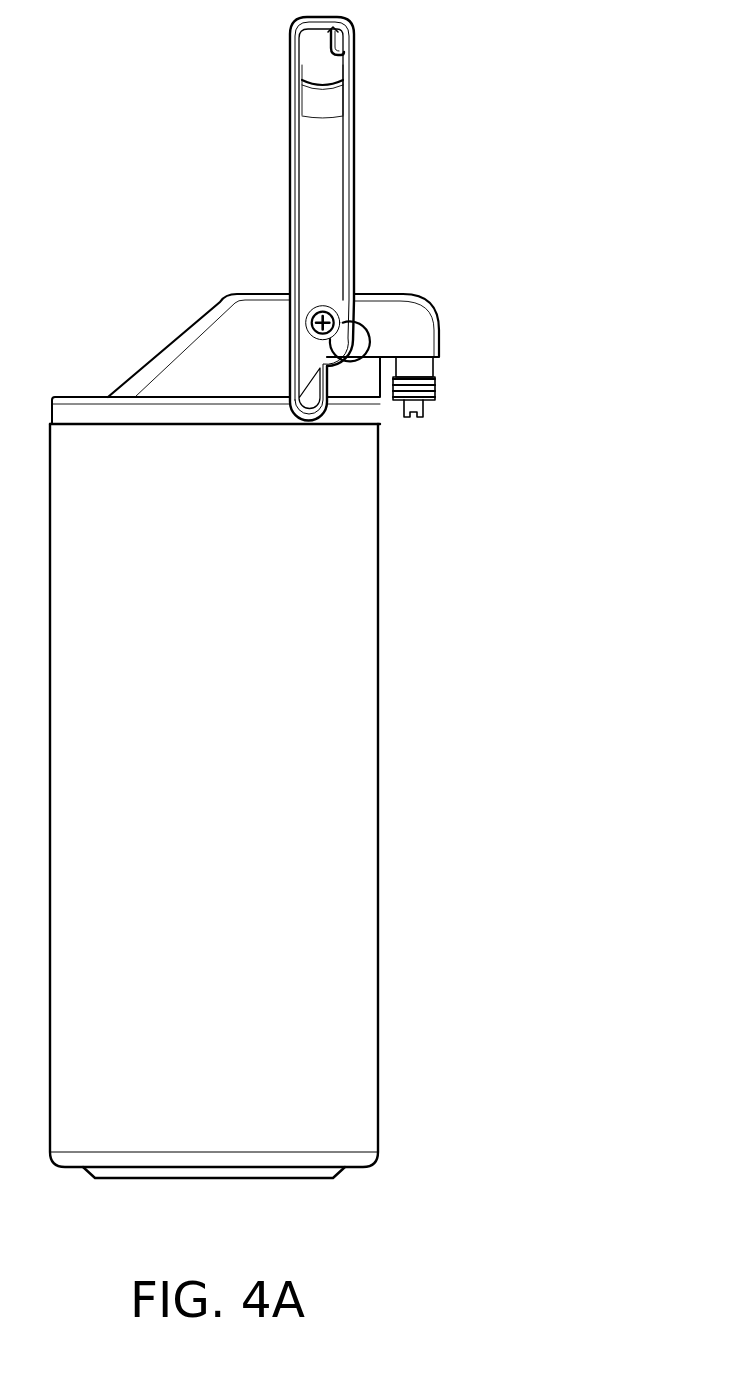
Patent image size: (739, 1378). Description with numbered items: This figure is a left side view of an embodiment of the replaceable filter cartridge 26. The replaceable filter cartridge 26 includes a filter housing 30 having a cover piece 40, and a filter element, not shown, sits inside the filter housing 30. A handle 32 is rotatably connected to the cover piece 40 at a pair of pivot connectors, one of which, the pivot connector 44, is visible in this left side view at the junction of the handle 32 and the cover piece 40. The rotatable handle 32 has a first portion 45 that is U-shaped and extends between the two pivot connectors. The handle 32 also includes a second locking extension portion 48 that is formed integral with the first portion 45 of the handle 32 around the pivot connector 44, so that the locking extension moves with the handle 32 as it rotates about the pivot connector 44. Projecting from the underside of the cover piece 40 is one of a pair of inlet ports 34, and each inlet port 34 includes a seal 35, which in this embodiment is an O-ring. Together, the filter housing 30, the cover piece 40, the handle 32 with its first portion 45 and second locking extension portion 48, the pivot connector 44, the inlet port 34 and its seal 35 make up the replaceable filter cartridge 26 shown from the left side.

The replaceable filter cartridge 26 is at (406, 243).
The filter housing 30 is at (337, 842).
The handle 32 is at (354, 192).
The inlet port 34 is at (420, 418).
The seal 35 is at (435, 393).
The cover piece 40 is at (442, 333).
The pivot connector 44 is at (337, 313).
The first portion 45 is at (347, 23).
The second locking extension portion 48 is at (330, 390).